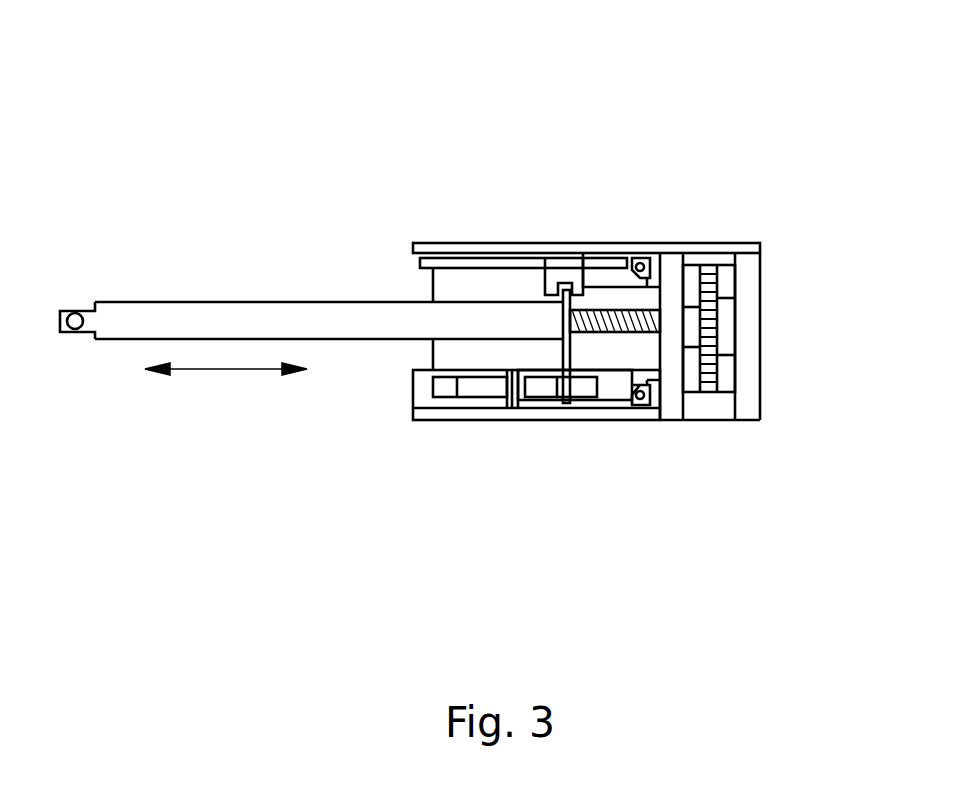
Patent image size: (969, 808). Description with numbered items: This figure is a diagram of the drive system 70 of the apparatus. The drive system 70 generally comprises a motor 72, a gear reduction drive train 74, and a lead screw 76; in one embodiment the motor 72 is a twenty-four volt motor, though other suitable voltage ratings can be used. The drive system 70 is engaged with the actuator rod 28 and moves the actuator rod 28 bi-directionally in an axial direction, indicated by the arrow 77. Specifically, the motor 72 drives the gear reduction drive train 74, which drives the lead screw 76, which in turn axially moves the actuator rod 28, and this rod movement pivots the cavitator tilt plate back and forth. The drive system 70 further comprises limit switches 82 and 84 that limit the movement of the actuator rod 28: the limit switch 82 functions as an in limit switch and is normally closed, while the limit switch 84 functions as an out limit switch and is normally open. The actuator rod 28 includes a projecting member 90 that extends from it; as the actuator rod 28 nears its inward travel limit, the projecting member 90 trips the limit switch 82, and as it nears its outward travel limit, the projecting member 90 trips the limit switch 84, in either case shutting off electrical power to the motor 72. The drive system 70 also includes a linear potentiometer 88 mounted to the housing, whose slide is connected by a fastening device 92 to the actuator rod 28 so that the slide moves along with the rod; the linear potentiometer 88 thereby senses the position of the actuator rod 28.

The drive system 70 is at (387, 90).
The actuator rod 28 is at (215, 302).
The arrow 77 is at (232, 371).
The motor 72 is at (443, 285).
The linear potentiometer 88 is at (487, 263).
The fastening device 92 is at (575, 277).
The lead screw 76 is at (642, 333).
The gear reduction drive train 74 is at (710, 267).
The limit switch 84 is at (448, 392).
The projecting member 90 is at (580, 388).
The limit switch 82 is at (617, 397).